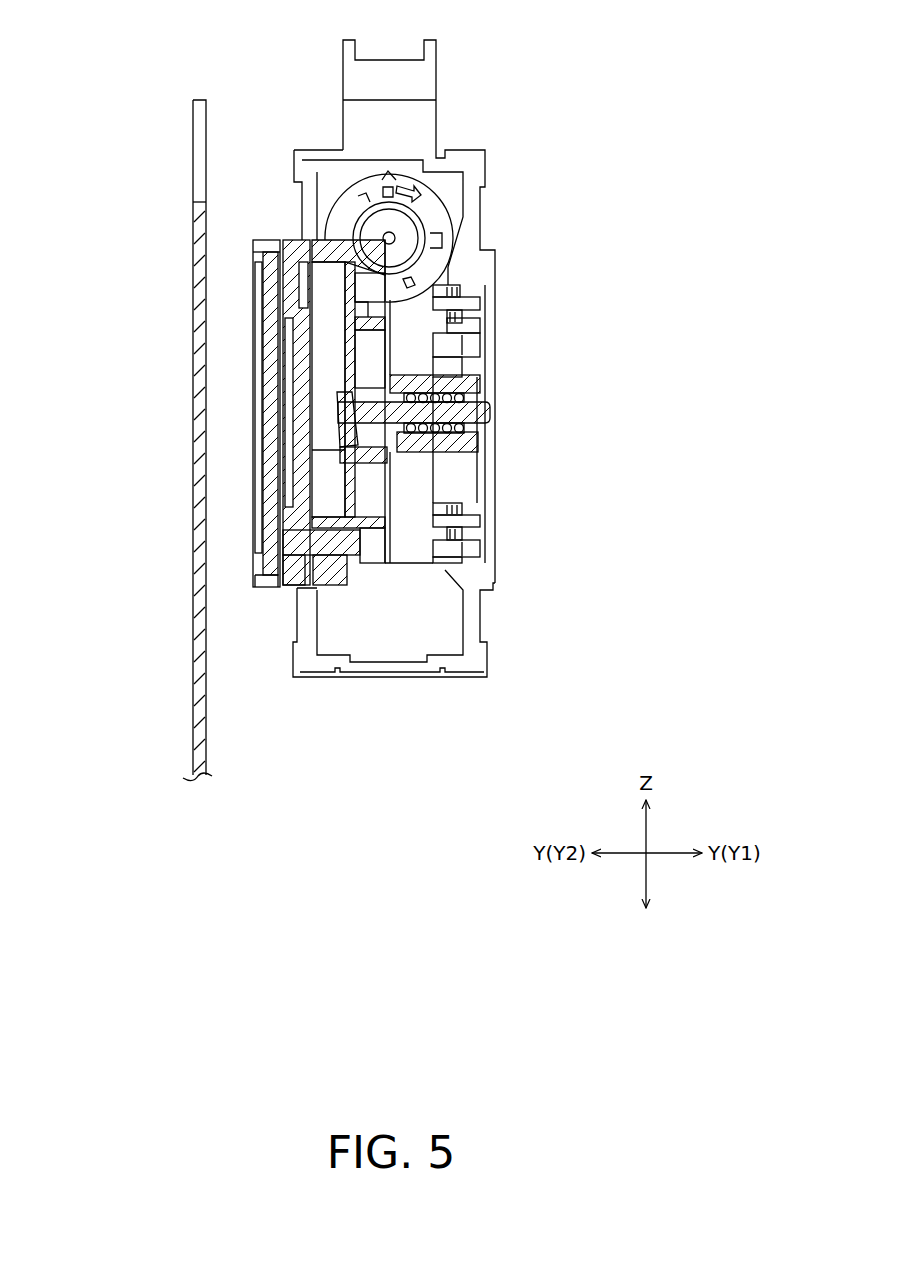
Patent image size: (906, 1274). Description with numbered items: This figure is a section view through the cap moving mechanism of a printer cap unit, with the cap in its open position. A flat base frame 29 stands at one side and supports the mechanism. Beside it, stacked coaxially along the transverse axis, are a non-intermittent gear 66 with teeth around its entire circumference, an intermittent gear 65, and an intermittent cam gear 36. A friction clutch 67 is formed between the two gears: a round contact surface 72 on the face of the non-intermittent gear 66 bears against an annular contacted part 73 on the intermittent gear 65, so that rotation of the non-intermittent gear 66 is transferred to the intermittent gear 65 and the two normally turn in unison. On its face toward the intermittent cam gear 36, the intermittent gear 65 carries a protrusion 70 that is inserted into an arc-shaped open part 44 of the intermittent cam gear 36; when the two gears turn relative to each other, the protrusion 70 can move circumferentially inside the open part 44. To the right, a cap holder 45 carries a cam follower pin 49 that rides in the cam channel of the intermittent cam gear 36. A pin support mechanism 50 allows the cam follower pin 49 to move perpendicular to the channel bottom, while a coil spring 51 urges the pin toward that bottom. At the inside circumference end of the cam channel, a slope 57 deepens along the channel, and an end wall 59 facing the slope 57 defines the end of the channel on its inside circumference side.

The base frame 29 is at (193, 325).
The intermittent cam gear 36 is at (389, 230).
The open part 44 is at (378, 548).
The cap holder 45 is at (452, 133).
The cam follower pin 49 is at (490, 412).
The pin support mechanism 50 is at (480, 450).
The coil spring 51 is at (452, 395).
The slope 57 is at (420, 432).
The end wall 59 is at (368, 410).
The intermittent gear 65 is at (290, 236).
The non-intermittent gear 66 is at (262, 236).
The friction clutch 67 is at (300, 657).
The protrusion 70 is at (345, 547).
The contact surface 72 is at (302, 553).
The contacted part 73 is at (300, 550).